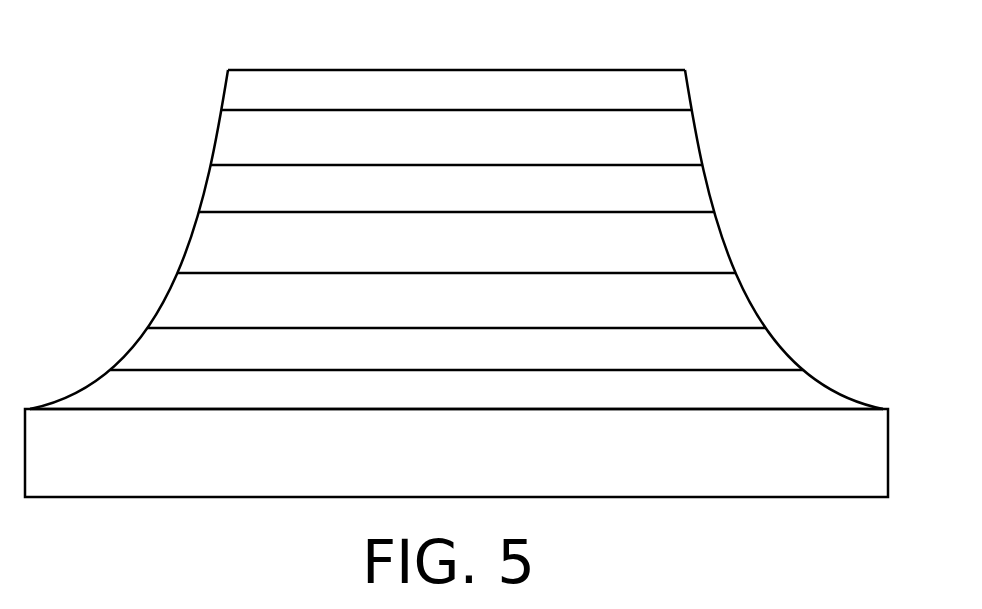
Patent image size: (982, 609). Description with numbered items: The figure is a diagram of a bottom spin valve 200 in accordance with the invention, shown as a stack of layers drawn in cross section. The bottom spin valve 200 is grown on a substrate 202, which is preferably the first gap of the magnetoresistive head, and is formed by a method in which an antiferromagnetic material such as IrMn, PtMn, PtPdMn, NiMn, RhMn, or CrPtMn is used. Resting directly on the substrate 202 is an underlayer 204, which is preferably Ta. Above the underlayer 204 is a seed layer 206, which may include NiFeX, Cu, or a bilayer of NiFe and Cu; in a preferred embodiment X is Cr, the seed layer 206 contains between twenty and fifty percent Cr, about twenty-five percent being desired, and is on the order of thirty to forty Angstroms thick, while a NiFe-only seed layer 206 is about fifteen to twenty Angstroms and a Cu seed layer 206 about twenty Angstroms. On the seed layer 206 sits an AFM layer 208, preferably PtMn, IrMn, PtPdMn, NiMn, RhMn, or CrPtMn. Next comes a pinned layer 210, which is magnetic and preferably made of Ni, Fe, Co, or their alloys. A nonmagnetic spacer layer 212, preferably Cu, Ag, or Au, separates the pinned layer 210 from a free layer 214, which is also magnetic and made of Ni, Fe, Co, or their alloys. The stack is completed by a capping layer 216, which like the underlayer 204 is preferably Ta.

The bottom spin valve 200 is at (477, 47).
The substrate 202 is at (163, 498).
The underlayer 204 is at (92, 390).
The seed layer 206 is at (772, 343).
The AFM layer 208 is at (170, 304).
The pinned layer 210 is at (722, 240).
The spacer layer 212 is at (213, 190).
The free layer 214 is at (693, 140).
The capping layer 216 is at (230, 88).